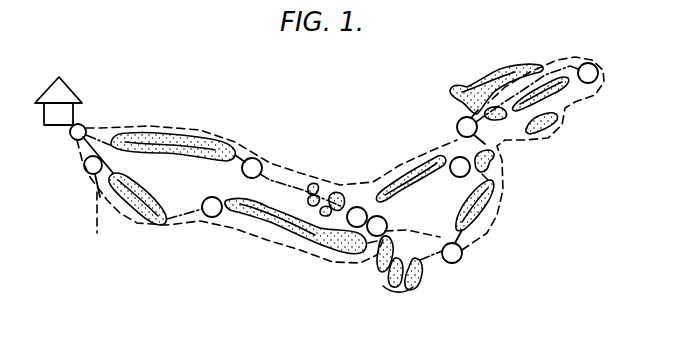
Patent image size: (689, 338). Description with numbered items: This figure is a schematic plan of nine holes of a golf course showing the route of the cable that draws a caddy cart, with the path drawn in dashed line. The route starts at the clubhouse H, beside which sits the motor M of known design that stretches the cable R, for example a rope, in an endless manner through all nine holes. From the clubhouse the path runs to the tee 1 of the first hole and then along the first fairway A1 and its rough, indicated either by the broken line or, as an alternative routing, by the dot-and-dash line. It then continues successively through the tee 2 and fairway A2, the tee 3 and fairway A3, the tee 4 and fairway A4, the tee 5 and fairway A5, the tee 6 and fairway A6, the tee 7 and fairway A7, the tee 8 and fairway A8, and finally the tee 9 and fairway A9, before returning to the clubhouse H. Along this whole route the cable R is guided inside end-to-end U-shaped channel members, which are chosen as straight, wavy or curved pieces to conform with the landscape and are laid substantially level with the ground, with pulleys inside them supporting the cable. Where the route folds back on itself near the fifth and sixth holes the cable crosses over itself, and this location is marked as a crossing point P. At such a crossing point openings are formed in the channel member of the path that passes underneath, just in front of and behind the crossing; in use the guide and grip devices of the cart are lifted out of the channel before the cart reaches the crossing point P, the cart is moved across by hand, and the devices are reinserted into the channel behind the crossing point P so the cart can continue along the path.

The clubhouse H is at (61, 98).
The motor M is at (86, 123).
The cable R is at (137, 223).
The crossing point P is at (507, 143).
The tee 1 is at (98, 167).
The tee 2 is at (212, 207).
The tee 3 is at (377, 226).
The tee 4 is at (452, 246).
The tee 5 is at (471, 127).
The tee 6 is at (588, 73).
The tee 7 is at (460, 167).
The tee 8 is at (357, 217).
The tee 9 is at (248, 166).
The fairway A1 is at (137, 198).
The fairway A2 is at (296, 232).
The fairway A3 is at (401, 264).
The fairway A4 is at (491, 205).
The fairway A5 is at (496, 85).
The fairway A6 is at (538, 105).
The fairway A7 is at (410, 171).
The fairway A8 is at (326, 185).
The fairway A9 is at (173, 137).